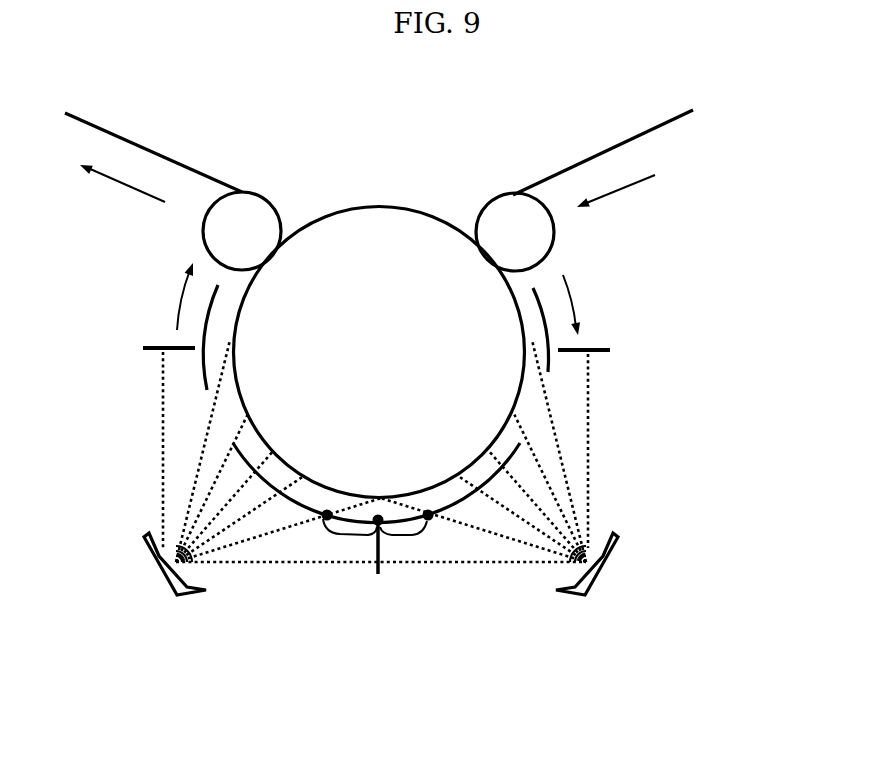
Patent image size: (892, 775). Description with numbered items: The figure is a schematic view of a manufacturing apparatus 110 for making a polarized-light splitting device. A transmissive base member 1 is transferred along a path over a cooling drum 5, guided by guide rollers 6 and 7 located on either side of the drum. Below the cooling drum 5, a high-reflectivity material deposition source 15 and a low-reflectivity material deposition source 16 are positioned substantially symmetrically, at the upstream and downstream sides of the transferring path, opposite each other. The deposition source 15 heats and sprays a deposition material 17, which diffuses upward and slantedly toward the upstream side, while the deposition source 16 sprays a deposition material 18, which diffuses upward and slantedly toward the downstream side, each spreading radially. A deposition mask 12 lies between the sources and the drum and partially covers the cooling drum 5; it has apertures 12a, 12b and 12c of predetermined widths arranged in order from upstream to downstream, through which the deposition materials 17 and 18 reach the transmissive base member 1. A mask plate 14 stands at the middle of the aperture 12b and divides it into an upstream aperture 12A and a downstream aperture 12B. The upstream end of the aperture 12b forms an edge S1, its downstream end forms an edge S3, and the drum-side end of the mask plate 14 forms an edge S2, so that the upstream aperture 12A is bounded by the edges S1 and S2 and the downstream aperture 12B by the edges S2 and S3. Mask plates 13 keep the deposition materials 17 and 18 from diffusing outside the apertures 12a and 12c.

The transmissive base member 1 is at (524, 175).
The cooling drum 5 is at (333, 227).
The guide roller 6 is at (530, 247).
The guide roller 7 is at (220, 233).
The deposition mask 12 is at (377, 489).
The aperture 12a is at (540, 443).
The aperture 12b is at (406, 568).
The aperture 12c is at (214, 438).
The upstream aperture 12A is at (413, 536).
The downstream aperture 12B is at (347, 536).
The mask plate 13 is at (155, 347).
The mask plate 14 is at (379, 575).
The high-reflectivity material deposition source 15 is at (617, 566).
The low-reflectivity material deposition source 16 is at (138, 553).
The deposition material 17 is at (609, 497).
The deposition material 18 is at (147, 494).
The manufacturing apparatus 110 is at (742, 385).
The edge S1 is at (427, 509).
The edge S2 is at (378, 514).
The edge S3 is at (327, 510).